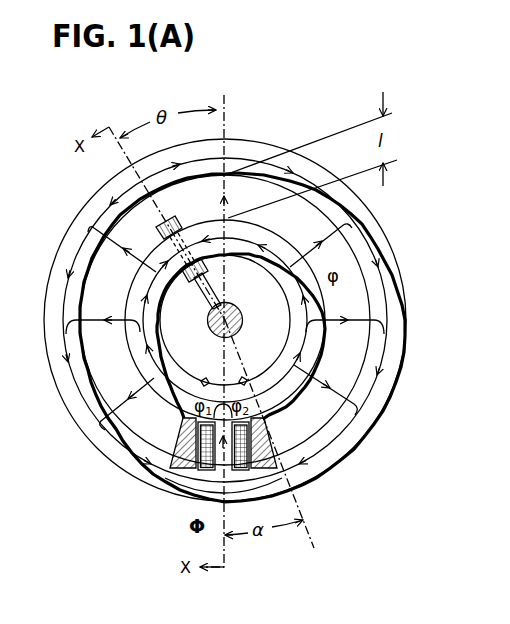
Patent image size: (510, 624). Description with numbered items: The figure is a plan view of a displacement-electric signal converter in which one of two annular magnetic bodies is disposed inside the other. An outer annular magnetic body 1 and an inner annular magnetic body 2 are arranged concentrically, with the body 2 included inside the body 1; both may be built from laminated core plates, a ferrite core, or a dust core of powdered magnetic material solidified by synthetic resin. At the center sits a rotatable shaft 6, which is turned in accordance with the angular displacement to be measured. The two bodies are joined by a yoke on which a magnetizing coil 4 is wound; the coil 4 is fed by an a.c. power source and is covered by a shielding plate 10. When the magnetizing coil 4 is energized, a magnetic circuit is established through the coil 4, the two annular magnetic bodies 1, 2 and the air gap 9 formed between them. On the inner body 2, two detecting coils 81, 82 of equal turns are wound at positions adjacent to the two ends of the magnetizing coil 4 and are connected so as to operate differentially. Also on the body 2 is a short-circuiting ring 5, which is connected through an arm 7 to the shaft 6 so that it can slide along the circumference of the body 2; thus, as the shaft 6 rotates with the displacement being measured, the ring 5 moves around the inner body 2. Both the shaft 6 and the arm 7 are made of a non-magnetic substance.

The annular magnetic body 1 is at (406, 320).
The annular magnetic body 2 is at (320, 344).
The magnetizing coil 4 is at (212, 469).
The short-circuiting ring 5 is at (176, 222).
The rotatable shaft 6 is at (240, 314).
The arm 7 is at (203, 296).
The air gap 9 is at (308, 428).
The shielding plate 10 is at (176, 455).
The detecting coil 81 is at (204, 378).
The detecting coil 82 is at (245, 378).